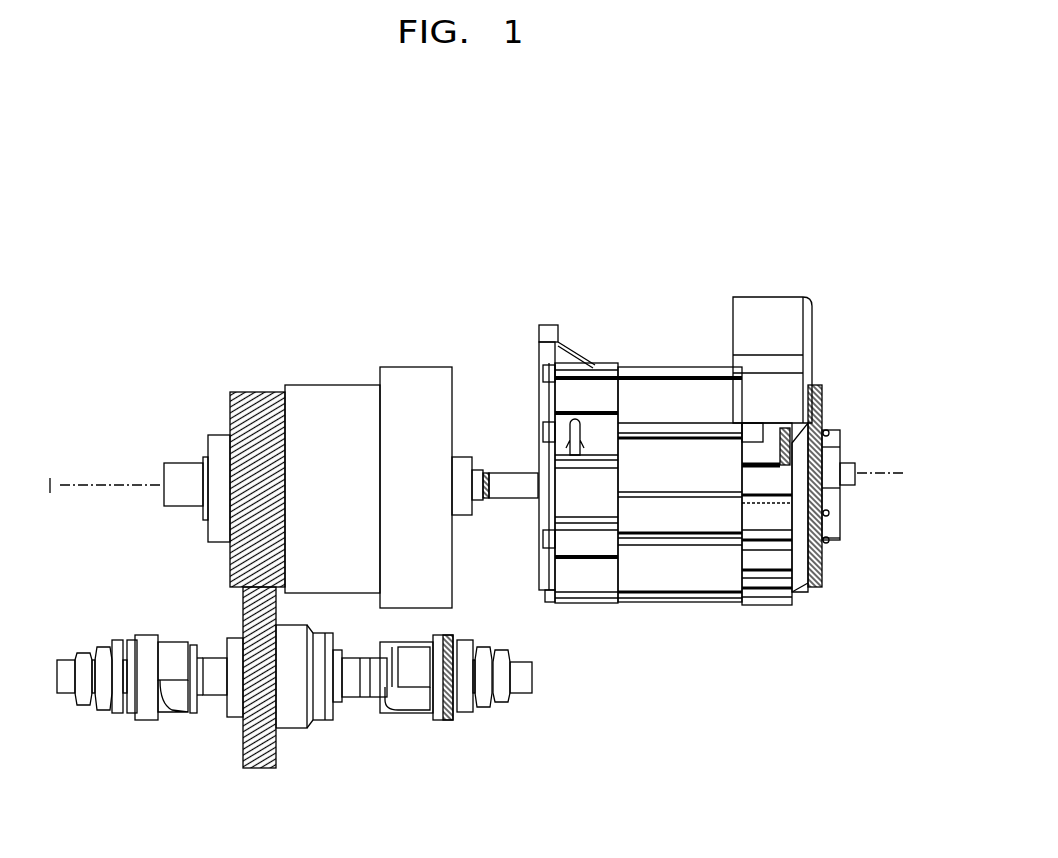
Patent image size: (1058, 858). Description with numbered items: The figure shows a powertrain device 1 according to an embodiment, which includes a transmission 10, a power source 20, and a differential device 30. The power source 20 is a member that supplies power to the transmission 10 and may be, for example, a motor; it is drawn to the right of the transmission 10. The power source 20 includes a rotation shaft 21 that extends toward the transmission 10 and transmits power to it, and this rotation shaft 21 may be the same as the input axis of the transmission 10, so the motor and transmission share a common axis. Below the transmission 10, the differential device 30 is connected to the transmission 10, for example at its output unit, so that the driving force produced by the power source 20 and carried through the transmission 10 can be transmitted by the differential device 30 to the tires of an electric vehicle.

The powertrain device 1 is at (796, 215).
The transmission 10 is at (339, 372).
The power source 20 is at (675, 349).
The rotation shaft 21 is at (510, 500).
The differential device 30 is at (327, 766).